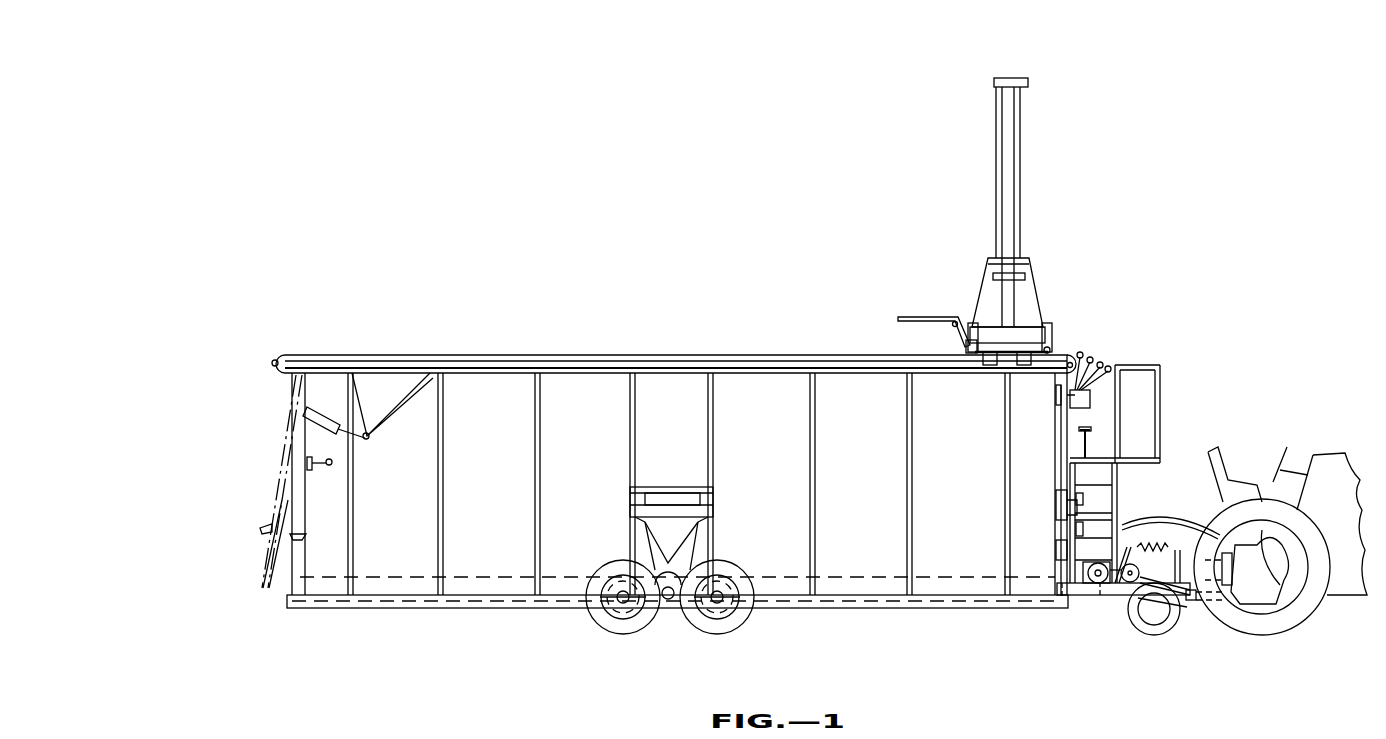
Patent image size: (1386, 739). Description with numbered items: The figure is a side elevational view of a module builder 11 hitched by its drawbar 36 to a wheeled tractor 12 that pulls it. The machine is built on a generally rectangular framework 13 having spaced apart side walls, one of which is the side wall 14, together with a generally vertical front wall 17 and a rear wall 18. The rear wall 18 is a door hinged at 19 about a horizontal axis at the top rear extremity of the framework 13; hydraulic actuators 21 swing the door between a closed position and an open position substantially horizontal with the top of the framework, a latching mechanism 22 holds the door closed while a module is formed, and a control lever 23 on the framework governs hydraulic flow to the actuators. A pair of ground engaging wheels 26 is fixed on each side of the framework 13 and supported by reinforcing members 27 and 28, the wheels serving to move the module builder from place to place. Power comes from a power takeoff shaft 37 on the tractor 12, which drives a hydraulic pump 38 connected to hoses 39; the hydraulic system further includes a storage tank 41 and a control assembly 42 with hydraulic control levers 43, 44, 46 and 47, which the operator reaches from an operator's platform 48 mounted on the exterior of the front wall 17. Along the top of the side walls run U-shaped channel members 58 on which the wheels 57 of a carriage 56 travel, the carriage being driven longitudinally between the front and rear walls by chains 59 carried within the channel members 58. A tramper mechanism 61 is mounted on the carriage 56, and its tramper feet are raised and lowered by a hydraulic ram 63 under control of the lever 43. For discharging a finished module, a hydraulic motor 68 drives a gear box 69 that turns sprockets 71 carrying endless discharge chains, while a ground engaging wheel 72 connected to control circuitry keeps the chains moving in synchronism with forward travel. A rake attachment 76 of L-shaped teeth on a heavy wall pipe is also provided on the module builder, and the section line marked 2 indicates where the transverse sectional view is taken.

The section line 2- 2 is at (251, 123).
The module builder 11 is at (836, 240).
The wheeled tractor 12 is at (1347, 472).
The rectangular framework 13 is at (700, 353).
The side wall 14 is at (588, 474).
The front wall 17 is at (1055, 522).
The rear wall 18 is at (288, 585).
The hinge 19 is at (297, 375).
The hydraulic actuators 21 is at (330, 428).
The latching mechanism 22 is at (292, 540).
The control lever 23 is at (334, 463).
The ground engaging wheels 26 is at (593, 622).
The reinforcing member 27 is at (700, 500).
The reinforcing member 28 is at (693, 542).
The drawbar 36 is at (1186, 598).
The power takeoff shaft 37 is at (1250, 532).
The hydraulic pump 38 is at (1225, 585).
The hoses 39 is at (1160, 545).
The storage tank 41 is at (1058, 498).
The control assembly 42 is at (1097, 398).
The hydraulic control lever 43 is at (1082, 350).
The hydraulic control lever 44 is at (1092, 358).
The hydraulic control lever 46 is at (1102, 363).
The hydraulic control lever 47 is at (1110, 367).
The operator's platform 48 is at (1162, 395).
The carriage 56 is at (968, 300).
The carriage wheels 57 is at (966, 348).
The U-shaped channel members 58 is at (465, 355).
The chains 59 is at (612, 363).
The tramper mechanism 61 is at (1026, 232).
The hydraulic ram 63 is at (1010, 178).
The hydraulic motor 68 is at (1100, 597).
The gear box 69 is at (1100, 560).
The sprockets 71 is at (1060, 600).
The wheel 72 is at (1162, 632).
The rake attachment 76 is at (892, 321).